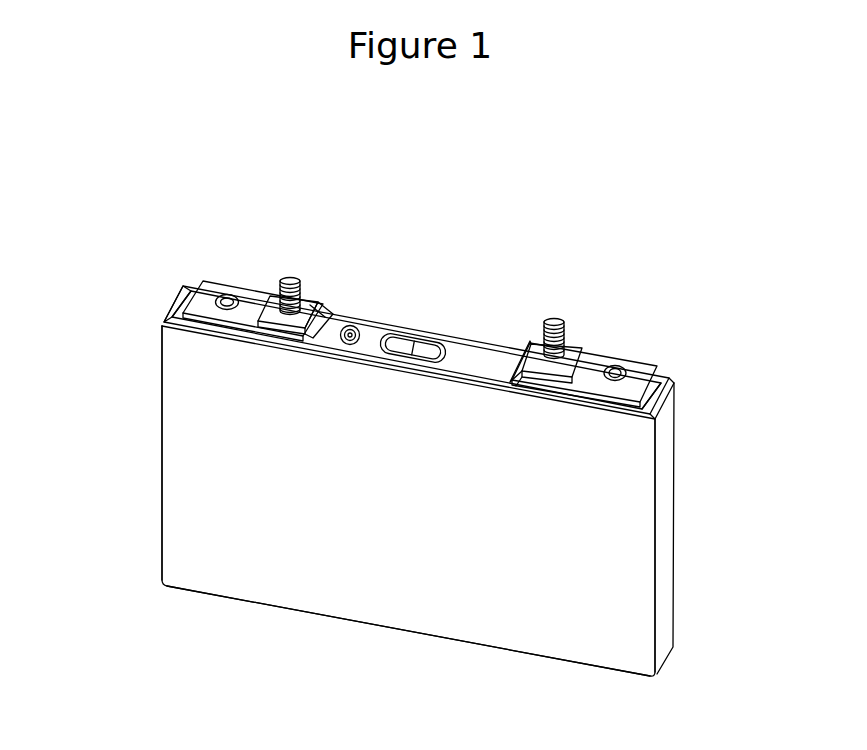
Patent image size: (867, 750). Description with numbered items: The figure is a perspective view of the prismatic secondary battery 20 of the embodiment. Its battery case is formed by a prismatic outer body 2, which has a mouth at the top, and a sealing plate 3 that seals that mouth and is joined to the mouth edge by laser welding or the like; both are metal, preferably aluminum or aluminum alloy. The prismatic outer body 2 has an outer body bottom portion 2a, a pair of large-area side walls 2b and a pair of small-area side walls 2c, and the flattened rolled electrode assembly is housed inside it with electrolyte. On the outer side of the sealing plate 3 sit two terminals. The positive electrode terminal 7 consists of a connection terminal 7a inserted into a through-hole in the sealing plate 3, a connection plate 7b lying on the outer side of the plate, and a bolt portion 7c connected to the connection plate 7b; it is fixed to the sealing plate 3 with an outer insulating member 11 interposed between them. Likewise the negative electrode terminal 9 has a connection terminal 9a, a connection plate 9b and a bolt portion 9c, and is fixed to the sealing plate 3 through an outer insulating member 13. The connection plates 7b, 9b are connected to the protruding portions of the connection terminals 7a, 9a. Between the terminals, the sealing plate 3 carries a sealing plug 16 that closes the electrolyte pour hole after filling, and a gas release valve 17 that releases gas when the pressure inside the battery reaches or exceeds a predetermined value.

The prismatic secondary battery 20 is at (437, 141).
The prismatic outer body 2 is at (204, 562).
The outer body bottom portion 2a is at (428, 635).
The large-area side walls 2b is at (527, 600).
The small-area side walls 2c is at (161, 465).
The sealing plate 3 is at (468, 357).
The positive electrode terminal 7 is at (261, 263).
The connection terminal 7a is at (228, 297).
The connection plate 7b is at (253, 306).
The bolt portion 7c is at (306, 271).
The negative electrode terminal 9 is at (598, 320).
The connection terminal 9a is at (616, 368).
The connection plate 9b is at (593, 362).
The bolt portion 9c is at (556, 312).
The outer insulating member 11 is at (182, 285).
The outer insulating member 13 is at (660, 366).
The sealing plug 16 is at (352, 330).
The gas release valve 17 is at (428, 343).